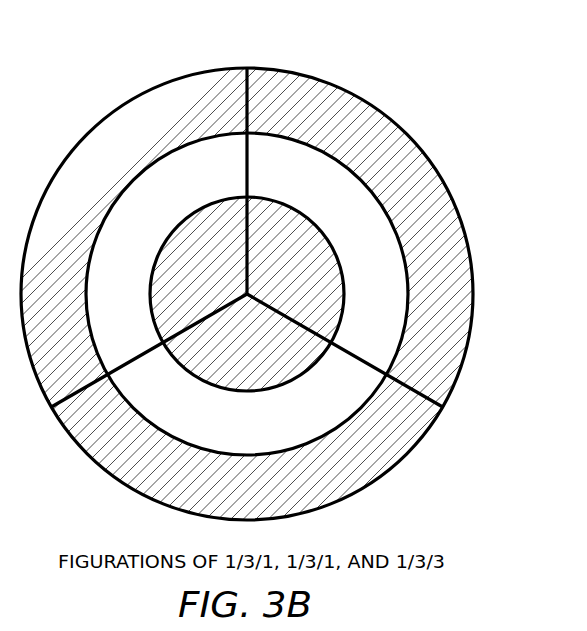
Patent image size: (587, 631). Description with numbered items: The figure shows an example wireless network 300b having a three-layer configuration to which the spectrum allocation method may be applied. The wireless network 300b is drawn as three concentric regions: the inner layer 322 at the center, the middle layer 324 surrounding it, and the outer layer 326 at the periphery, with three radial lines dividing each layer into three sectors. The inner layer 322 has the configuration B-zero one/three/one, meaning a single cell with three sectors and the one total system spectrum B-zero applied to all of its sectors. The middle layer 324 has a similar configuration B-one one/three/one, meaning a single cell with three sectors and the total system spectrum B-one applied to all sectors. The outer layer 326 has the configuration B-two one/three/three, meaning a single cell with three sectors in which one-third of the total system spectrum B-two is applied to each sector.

The wireless network 300b is at (97, 73).
The outer layer 326 is at (440, 128).
The middle layer 324 is at (409, 279).
The inner layer 322 is at (298, 380).